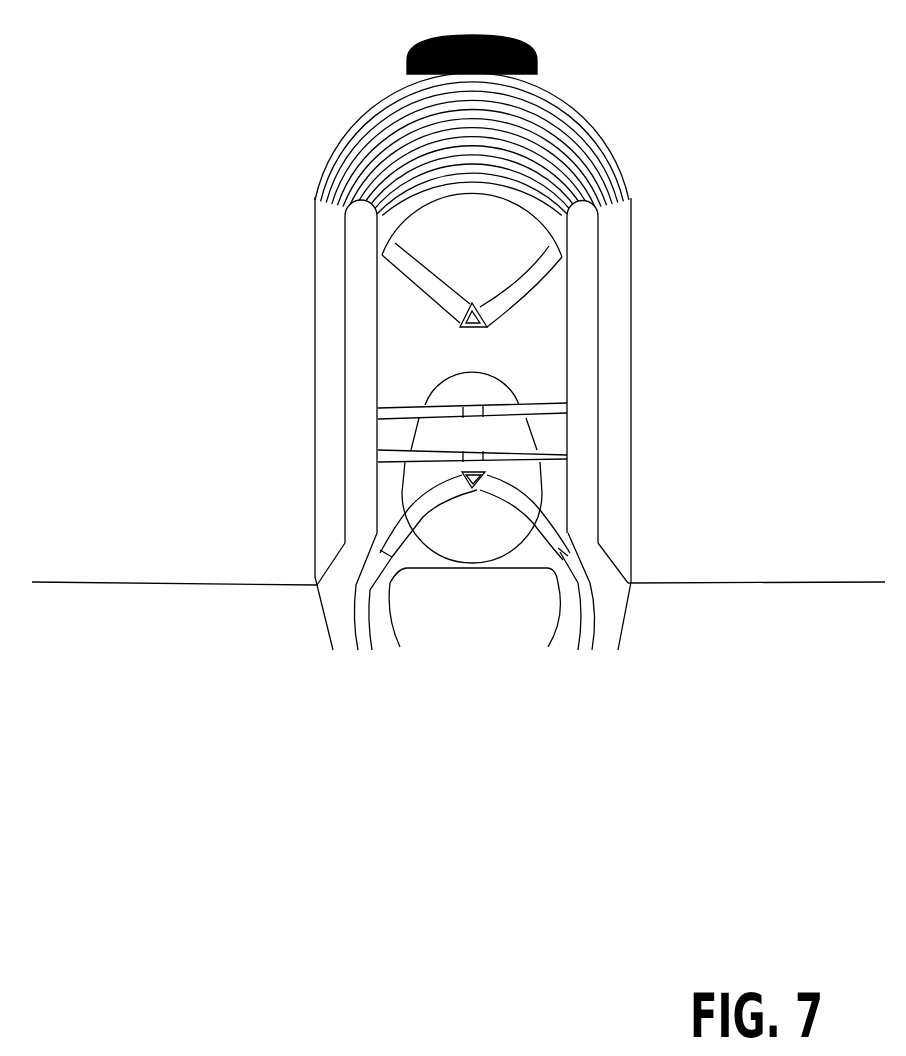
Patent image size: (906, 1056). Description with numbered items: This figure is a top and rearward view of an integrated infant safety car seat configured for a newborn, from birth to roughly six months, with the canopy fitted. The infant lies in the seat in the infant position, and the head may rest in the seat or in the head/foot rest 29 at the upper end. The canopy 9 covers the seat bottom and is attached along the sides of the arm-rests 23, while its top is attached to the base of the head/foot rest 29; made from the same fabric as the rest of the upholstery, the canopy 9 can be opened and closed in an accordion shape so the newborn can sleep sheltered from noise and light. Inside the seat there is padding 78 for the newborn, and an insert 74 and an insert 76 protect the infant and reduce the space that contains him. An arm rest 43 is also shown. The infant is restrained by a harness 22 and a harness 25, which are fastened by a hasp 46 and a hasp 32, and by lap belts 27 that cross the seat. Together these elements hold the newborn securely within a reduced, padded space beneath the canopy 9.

The canopy 9 is at (600, 120).
The head/foot rest 29 is at (520, 52).
The arm-rests 23 is at (627, 202).
The insert 76 is at (586, 343).
The padding 78 is at (525, 233).
The harness 22 is at (542, 268).
The hasp 46 is at (490, 316).
The insert 74 is at (535, 468).
The lap belts 27 is at (567, 457).
The hasp 32 is at (482, 476).
The harness 25 is at (517, 497).
The arm rest 43 is at (583, 532).